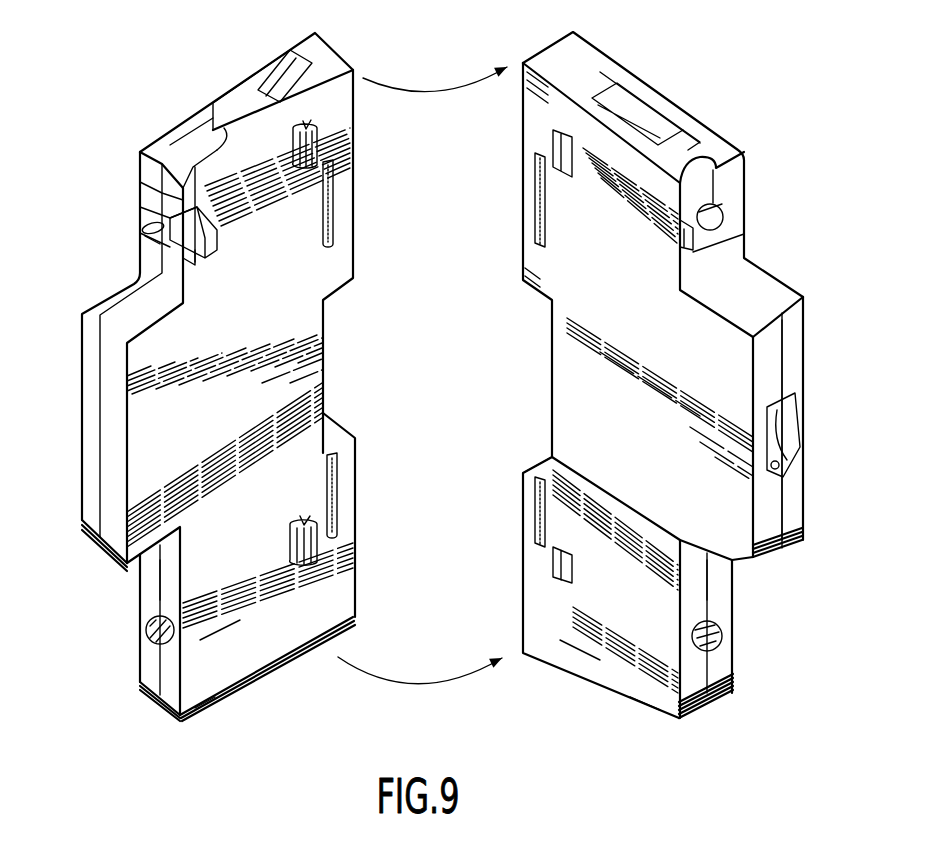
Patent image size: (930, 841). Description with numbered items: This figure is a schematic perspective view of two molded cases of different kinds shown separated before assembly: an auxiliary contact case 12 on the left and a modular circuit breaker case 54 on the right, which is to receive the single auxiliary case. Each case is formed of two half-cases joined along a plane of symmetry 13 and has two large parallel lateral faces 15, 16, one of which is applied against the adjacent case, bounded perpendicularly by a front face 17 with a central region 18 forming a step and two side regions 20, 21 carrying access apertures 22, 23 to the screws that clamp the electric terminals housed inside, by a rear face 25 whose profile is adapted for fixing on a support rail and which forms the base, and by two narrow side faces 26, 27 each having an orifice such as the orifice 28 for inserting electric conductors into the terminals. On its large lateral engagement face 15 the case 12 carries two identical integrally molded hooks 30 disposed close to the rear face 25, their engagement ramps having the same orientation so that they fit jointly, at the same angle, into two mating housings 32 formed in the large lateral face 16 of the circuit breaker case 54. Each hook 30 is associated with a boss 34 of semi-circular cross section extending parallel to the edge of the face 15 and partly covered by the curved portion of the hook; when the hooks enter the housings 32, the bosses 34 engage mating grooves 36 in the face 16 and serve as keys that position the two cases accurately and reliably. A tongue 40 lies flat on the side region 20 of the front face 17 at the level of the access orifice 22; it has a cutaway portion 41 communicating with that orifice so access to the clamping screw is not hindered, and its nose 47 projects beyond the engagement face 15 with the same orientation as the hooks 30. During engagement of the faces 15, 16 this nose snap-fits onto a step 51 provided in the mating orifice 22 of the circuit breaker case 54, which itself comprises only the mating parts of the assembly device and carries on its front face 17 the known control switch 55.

The case 12 is at (277, 672).
The modular circuit breaker case 54 is at (598, 702).
The plane of symmetry 13 is at (192, 143).
The large lateral face 15 is at (217, 643).
The large lateral face 16 is at (138, 603).
The front face 17 is at (120, 412).
The central region 18 is at (93, 476).
The side region 20 is at (160, 181).
The side region 21 is at (150, 574).
The access aperture 22 is at (150, 224).
The access aperture 23 is at (158, 628).
The rear face 25 is at (355, 596).
The narrow side face 26 is at (177, 142).
The narrow side face 27 is at (204, 706).
The orifice 28 is at (257, 90).
The hook 30 is at (310, 128).
The housing 32 is at (562, 152).
The boss 34 is at (334, 207).
The groove 36 is at (540, 210).
The tongue 40 is at (195, 262).
The cutaway portion 41 is at (160, 233).
The nose 47 is at (221, 215).
The step 51 is at (680, 238).
The control switch 55 is at (792, 423).